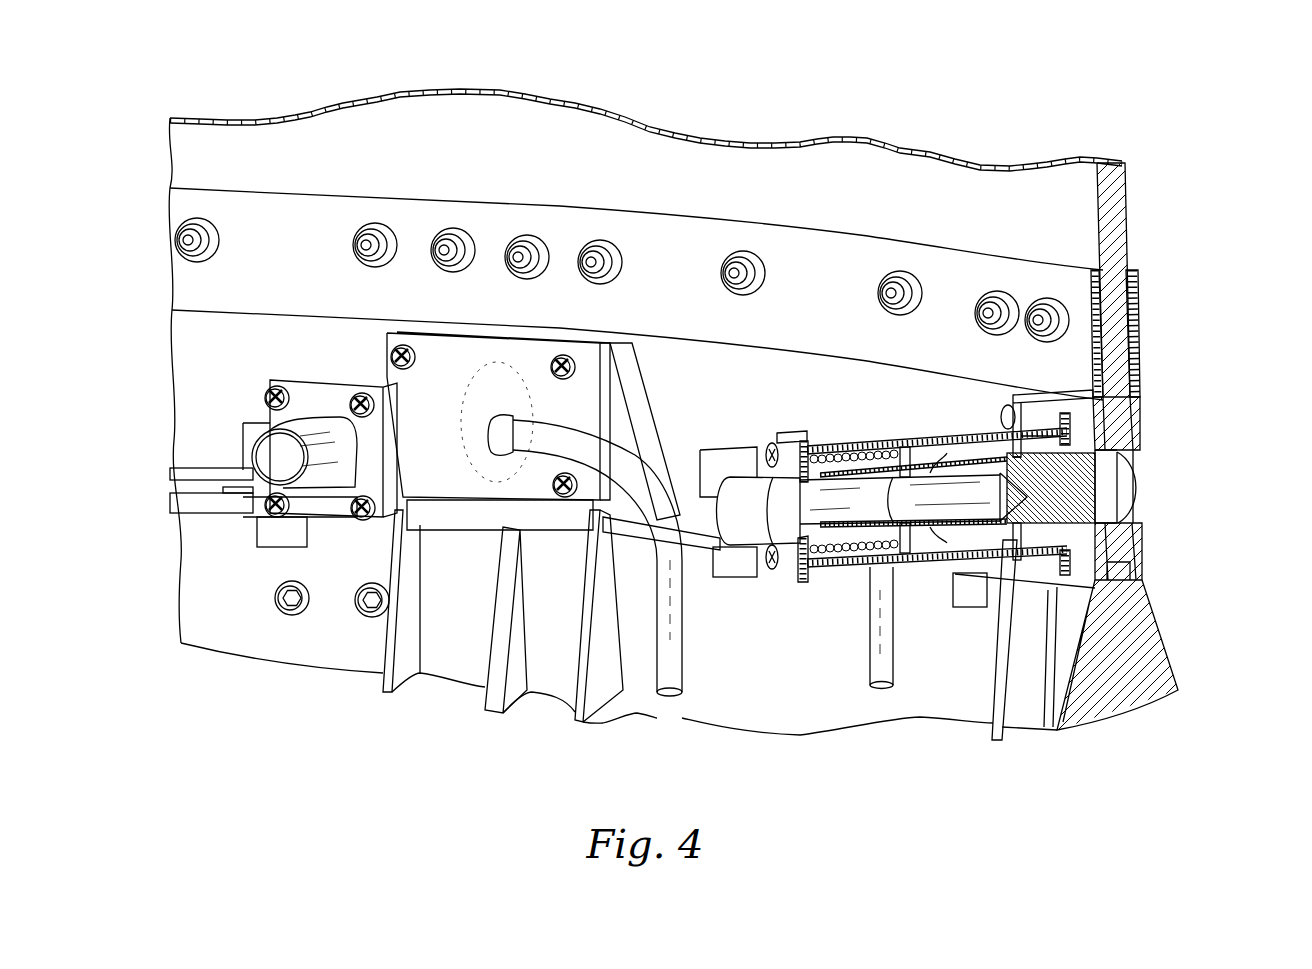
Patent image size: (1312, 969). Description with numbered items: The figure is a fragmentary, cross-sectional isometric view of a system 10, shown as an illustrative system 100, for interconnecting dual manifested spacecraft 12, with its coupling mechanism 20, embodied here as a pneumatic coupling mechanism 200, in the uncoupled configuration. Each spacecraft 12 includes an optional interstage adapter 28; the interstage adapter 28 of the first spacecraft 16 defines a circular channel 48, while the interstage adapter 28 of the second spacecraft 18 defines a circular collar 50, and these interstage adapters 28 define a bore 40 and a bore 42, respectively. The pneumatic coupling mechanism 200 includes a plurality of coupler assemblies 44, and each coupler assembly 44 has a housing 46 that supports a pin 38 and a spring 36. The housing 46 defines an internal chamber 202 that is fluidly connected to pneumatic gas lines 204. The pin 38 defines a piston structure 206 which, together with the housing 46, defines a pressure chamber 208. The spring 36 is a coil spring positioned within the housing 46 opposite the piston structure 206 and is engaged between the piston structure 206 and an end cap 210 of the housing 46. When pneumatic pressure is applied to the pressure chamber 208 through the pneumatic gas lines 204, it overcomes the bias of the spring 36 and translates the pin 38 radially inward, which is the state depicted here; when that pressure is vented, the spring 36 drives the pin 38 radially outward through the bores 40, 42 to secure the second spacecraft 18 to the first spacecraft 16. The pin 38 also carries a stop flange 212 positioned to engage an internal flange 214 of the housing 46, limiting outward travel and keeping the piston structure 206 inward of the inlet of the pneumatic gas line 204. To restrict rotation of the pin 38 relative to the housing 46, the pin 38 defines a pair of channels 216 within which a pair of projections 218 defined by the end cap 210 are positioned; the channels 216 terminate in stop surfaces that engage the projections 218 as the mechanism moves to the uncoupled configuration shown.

The system 10 is at (1201, 80).
The spacecraft 12 is at (1158, 160).
The first spacecraft 16 is at (1172, 628).
The second spacecraft 18 is at (1138, 240).
The coupling mechanism 20 is at (1178, 447).
The interstage adapter 28 is at (1011, 161).
The spring 36 is at (872, 548).
The pin 38 is at (250, 434).
The bore 40 is at (1150, 505).
The bore 42 is at (1137, 466).
The coupler assembly 44 is at (307, 338).
The housing 46 is at (351, 373).
The circular channel 48 is at (1148, 555).
The circular collar 50 is at (1145, 425).
The system 100 is at (1106, 80).
The pneumatic coupling mechanism 200 is at (1160, 362).
The internal chamber 202 is at (1020, 538).
The pneumatic gas line 204 is at (656, 694).
The piston structure 206 is at (930, 440).
The pressure chamber 208 is at (990, 470).
The end cap 210 is at (772, 444).
The stop flange 212 is at (985, 538).
The internal flange 214 is at (1008, 680).
The channel 216 is at (262, 436).
The projection 218 is at (805, 545).